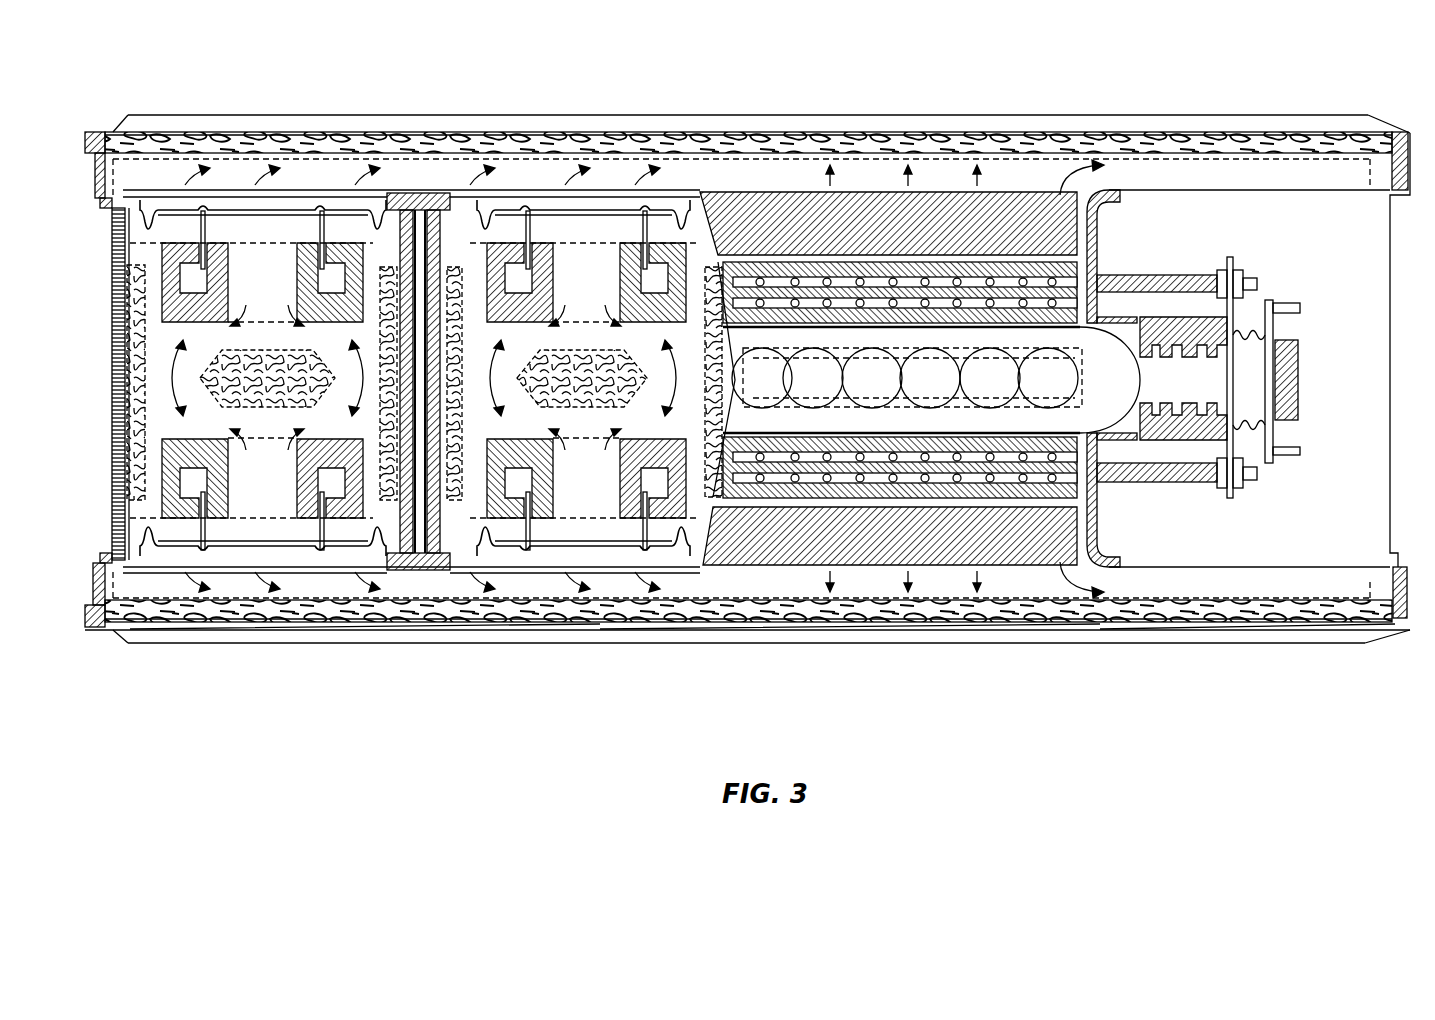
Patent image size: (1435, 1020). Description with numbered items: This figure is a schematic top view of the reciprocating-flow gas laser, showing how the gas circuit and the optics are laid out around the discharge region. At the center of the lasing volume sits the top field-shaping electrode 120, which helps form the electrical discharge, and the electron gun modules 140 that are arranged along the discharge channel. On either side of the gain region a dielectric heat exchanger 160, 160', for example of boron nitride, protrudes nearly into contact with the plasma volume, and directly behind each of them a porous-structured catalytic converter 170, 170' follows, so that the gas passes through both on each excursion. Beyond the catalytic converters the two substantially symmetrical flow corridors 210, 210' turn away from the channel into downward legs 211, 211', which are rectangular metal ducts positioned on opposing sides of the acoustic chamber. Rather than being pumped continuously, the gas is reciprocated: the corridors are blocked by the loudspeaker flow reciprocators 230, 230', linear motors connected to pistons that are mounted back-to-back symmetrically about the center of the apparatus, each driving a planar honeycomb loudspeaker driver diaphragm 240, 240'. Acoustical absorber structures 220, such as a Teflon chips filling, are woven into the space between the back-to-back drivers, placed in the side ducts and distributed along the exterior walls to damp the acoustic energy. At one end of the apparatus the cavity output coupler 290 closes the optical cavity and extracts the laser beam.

The top field-shaping electrode 120 is at (758, 423).
The electron gun modules 140 is at (813, 380).
The dielectric heat exchanger 160 is at (901, 203).
The dielectric heat exchanger 160' is at (942, 558).
The catalytic converter 170 is at (880, 167).
The catalytic converter 170' is at (890, 595).
The flow corridor 210 is at (747, 323).
The flow corridor 210' is at (747, 618).
The downward leg 211 is at (415, 316).
The downward leg 211' is at (465, 618).
The acoustical absorber structures 220 is at (380, 150).
The loudspeaker flow reciprocator 230 is at (382, 201).
The loudspeaker flow reciprocator 230' is at (453, 560).
The loudspeaker driver diaphragm 240 is at (263, 154).
The loudspeaker driver diaphragm 240' is at (418, 381).
The cavity output coupler 290 is at (1295, 410).